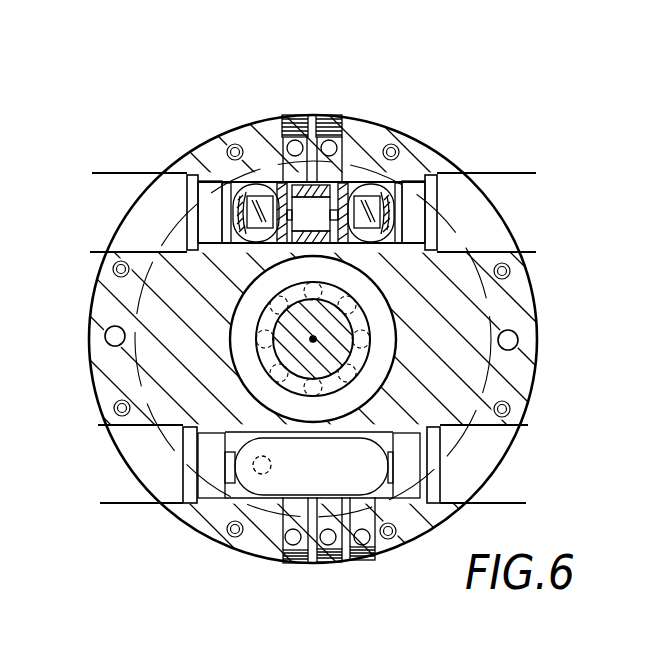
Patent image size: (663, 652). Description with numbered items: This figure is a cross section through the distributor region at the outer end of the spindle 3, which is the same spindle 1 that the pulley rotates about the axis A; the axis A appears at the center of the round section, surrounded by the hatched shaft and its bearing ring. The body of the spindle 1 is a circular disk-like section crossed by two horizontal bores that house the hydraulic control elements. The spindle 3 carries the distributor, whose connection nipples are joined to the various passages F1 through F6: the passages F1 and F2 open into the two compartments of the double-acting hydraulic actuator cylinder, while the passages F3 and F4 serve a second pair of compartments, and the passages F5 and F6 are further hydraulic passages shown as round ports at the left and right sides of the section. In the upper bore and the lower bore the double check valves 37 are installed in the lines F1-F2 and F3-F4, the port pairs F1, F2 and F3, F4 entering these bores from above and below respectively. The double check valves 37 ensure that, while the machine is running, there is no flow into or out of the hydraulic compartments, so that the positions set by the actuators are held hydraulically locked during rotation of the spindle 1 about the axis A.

The spindle 1 is at (425, 162).
The spindle 3 is at (320, 338).
The axis A is at (290, 356).
The double check valve 37 is at (262, 186).
The passage F1 is at (299, 144).
The passage F2 is at (336, 144).
The passage F3 is at (293, 542).
The passage F4 is at (329, 540).
The passage F5 is at (116, 334).
The passage F6 is at (510, 338).